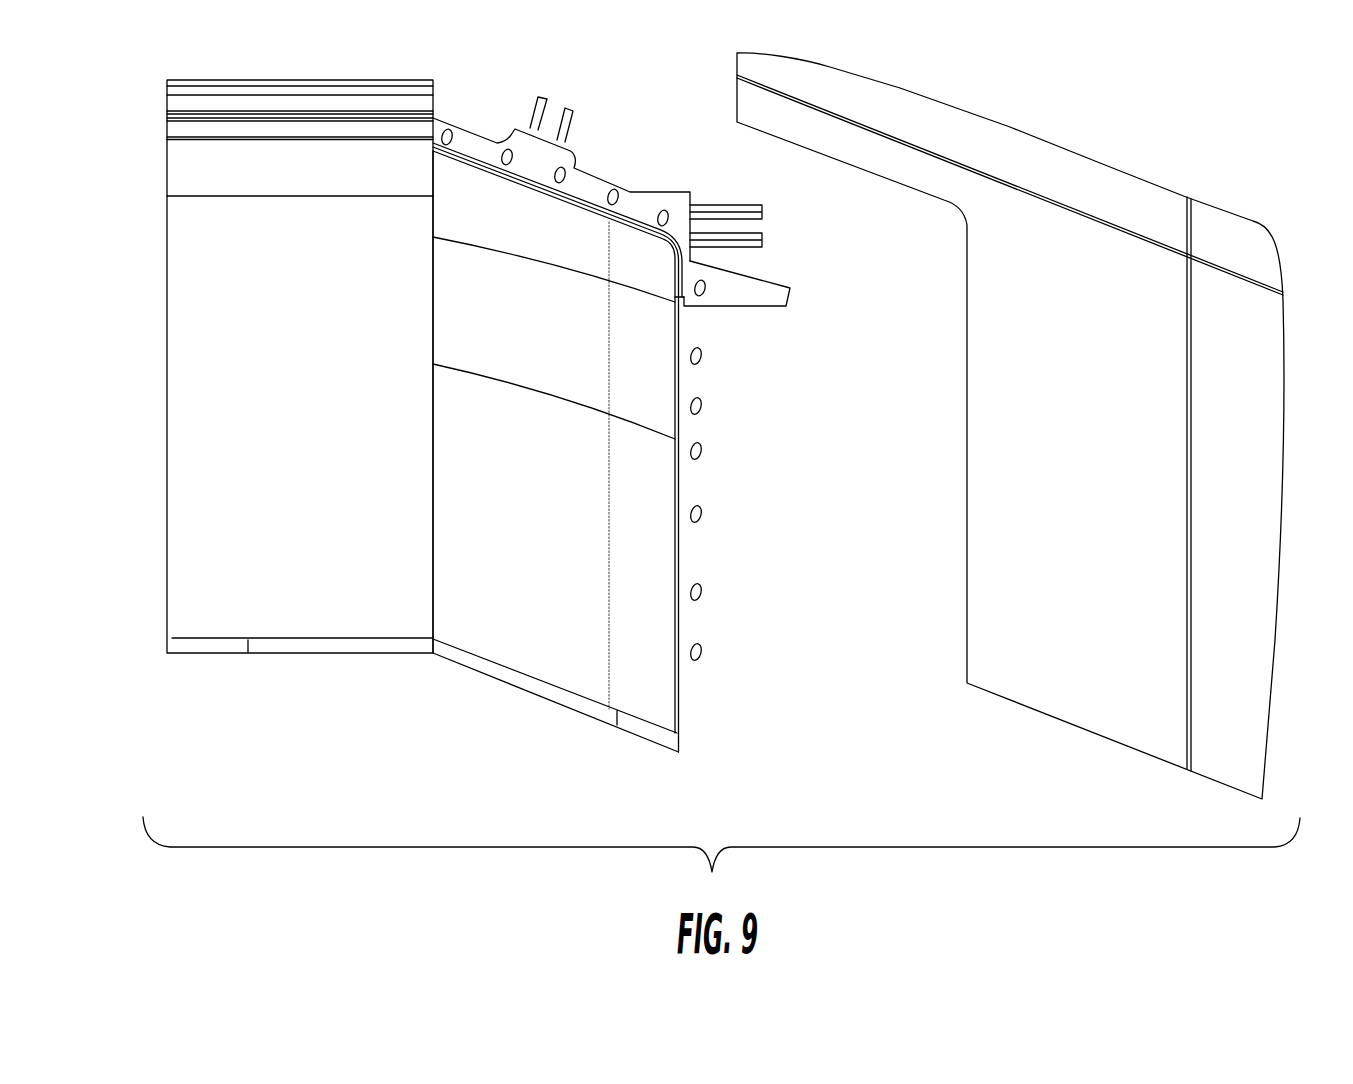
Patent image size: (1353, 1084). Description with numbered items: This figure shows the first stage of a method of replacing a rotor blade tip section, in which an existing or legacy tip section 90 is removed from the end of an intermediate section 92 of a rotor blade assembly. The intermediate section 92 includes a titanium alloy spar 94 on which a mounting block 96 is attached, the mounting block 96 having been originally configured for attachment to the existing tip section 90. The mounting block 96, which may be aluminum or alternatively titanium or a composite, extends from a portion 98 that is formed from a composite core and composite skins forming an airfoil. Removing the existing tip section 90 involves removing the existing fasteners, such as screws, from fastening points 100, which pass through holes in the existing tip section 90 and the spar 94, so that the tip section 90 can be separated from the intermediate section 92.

The existing tip section 90 is at (1023, 165).
The intermediate section 92 is at (206, 308).
The titanium alloy spar 94 is at (509, 140).
The mounting block 96 is at (765, 307).
The portion 98 is at (552, 632).
The fastening points 100 is at (701, 454).